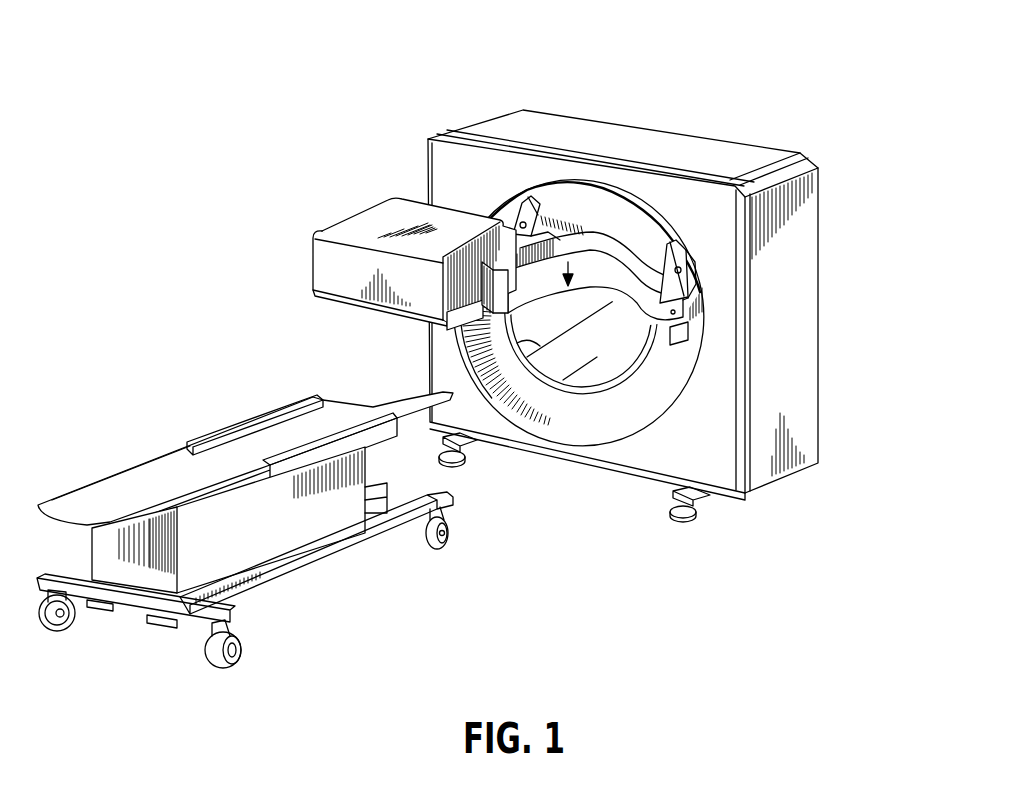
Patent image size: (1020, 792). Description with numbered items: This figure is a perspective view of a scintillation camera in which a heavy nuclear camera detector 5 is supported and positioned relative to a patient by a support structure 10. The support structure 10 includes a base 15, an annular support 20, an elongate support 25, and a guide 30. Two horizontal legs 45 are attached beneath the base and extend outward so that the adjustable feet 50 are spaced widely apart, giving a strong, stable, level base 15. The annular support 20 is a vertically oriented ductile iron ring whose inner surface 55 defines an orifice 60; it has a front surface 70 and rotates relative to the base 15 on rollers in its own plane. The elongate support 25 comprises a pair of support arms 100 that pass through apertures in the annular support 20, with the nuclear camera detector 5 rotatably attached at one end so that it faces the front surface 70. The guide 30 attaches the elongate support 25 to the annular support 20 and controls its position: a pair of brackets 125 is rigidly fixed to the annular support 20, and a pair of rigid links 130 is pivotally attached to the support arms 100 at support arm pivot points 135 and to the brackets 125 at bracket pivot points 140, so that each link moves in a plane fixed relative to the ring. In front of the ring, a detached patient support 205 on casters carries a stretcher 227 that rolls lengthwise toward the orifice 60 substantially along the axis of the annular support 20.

The nuclear camera detector 5 is at (313, 258).
The support structure 10 is at (846, 226).
The base 15 is at (800, 428).
The annular support 20 is at (604, 406).
The elongate support 25 is at (590, 232).
The guide 30 is at (674, 342).
The horizontal legs 45 is at (476, 443).
The feet 50 is at (452, 464).
The inner surface 55 is at (520, 341).
The orifice 60 is at (622, 345).
The front surface 70 is at (620, 403).
The support arms 100 is at (508, 297).
The brackets 125 is at (531, 212).
The rigid links 130 is at (690, 291).
The support arm pivot points 135 is at (690, 318).
The bracket pivot points 140 is at (560, 240).
The detached patient support 205 is at (313, 562).
The stretcher 227 is at (133, 478).